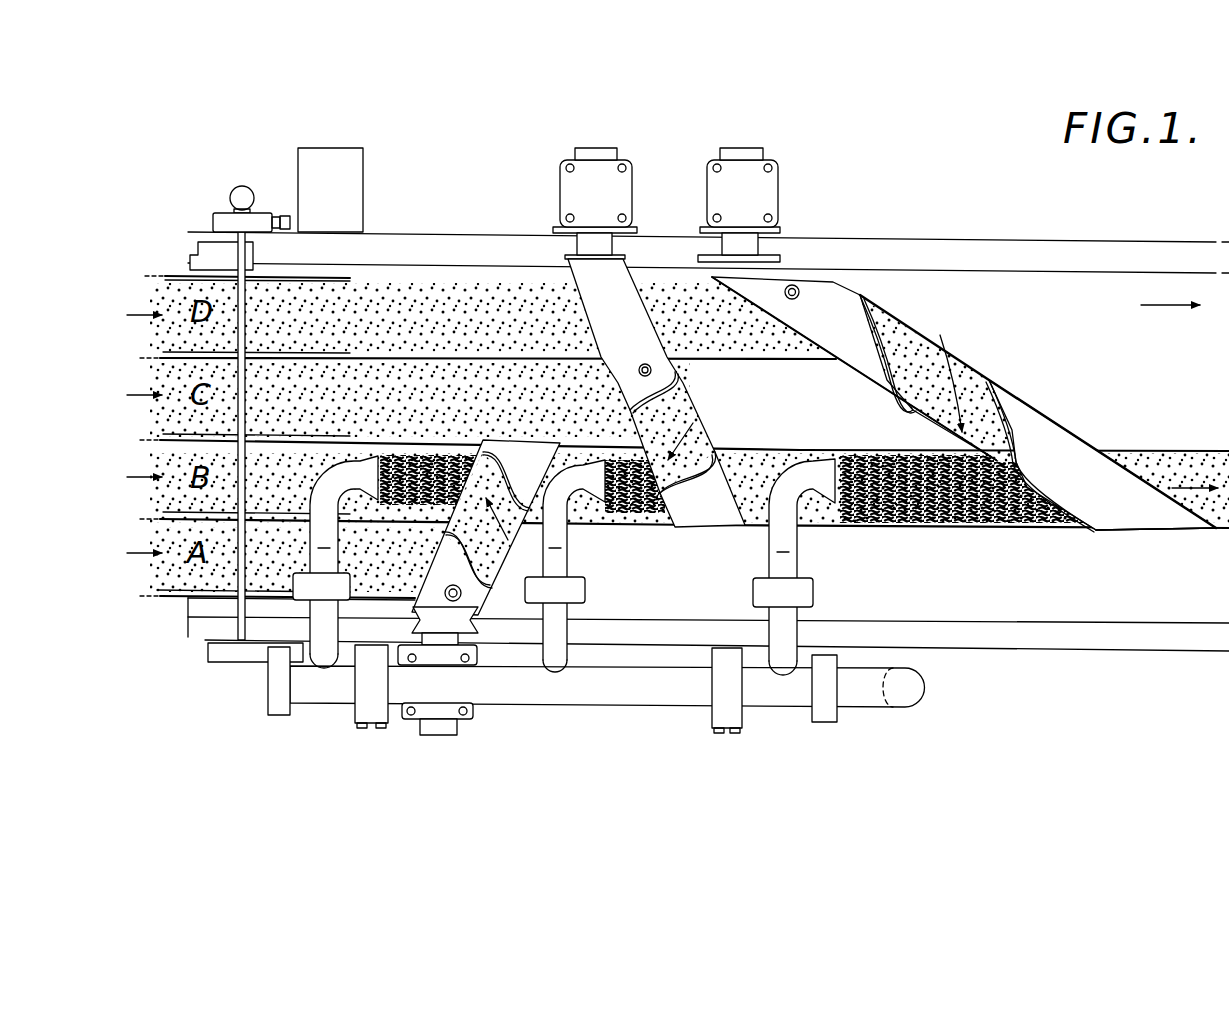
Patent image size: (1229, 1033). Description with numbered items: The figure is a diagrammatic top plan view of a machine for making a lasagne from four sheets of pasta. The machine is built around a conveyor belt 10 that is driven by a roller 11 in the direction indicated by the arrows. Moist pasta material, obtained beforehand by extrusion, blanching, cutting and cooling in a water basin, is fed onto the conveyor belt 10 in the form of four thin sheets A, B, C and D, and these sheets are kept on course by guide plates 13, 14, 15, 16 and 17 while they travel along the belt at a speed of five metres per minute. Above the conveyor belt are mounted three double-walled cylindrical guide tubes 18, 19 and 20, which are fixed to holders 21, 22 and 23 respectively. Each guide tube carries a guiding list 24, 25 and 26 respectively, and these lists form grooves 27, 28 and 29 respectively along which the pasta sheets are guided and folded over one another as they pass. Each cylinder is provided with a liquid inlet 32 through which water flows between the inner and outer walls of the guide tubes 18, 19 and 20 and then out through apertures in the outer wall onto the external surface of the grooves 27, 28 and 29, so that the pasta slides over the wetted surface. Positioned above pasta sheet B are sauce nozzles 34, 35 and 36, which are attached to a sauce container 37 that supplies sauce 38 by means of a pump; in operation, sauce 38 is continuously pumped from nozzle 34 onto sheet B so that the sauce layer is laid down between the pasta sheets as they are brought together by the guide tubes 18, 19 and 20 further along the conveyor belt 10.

The conveyor belt 10 is at (1036, 298).
The roller 11 is at (200, 248).
The guide plate 13 is at (183, 275).
The guide plate 14 is at (205, 358).
The guide plate 15 is at (205, 440).
The guide plate 16 is at (205, 518).
The guide plate 17 is at (178, 597).
The double-walled cylindrical guide tube 18 is at (508, 443).
The double-walled cylindrical guide tube 19 is at (613, 377).
The double-walled cylindrical guide tube 20 is at (1044, 430).
The holder 21 is at (415, 720).
The holder 22 is at (577, 192).
The holder 23 is at (718, 190).
The guiding list 24 is at (490, 590).
The guiding list 25 is at (720, 450).
The guiding list 26 is at (853, 295).
The groove 27 is at (553, 563).
The groove 28 is at (697, 405).
The groove 29 is at (913, 330).
The liquid inlet 32 is at (640, 360).
The sauce nozzle 34 is at (320, 520).
The sauce nozzle 35 is at (563, 513).
The sauce nozzle 36 is at (795, 507).
The sauce container 37 is at (652, 683).
The sauce 38 is at (440, 470).